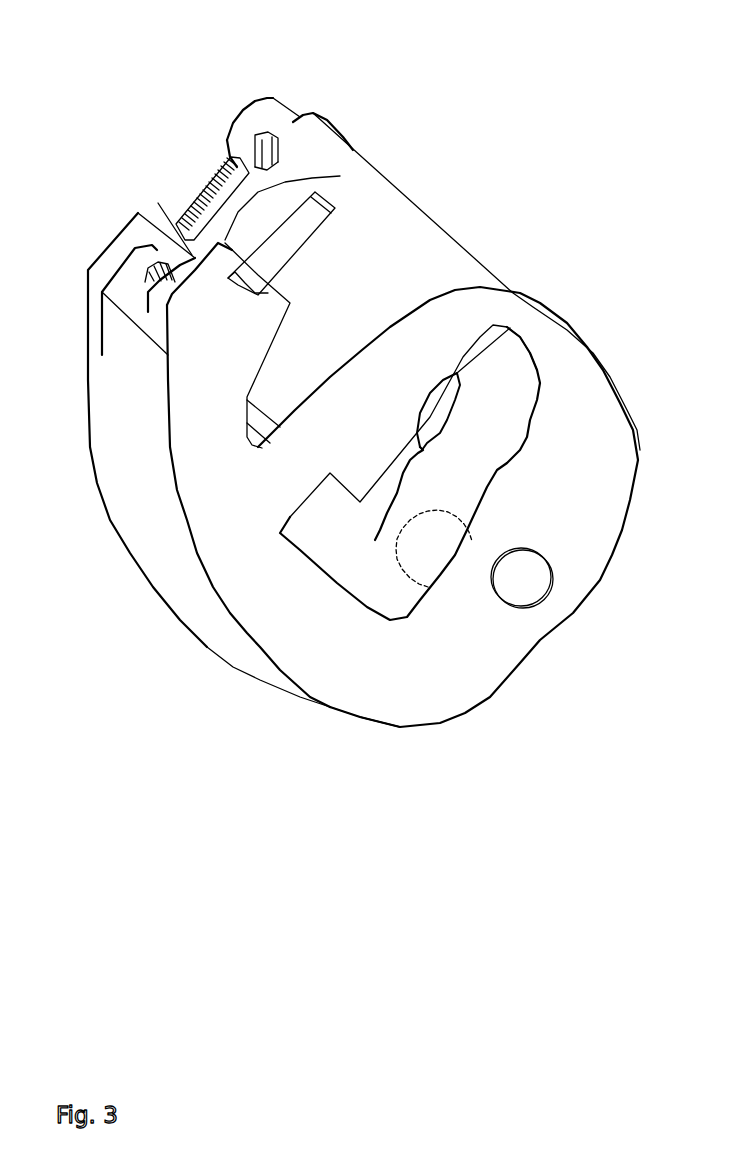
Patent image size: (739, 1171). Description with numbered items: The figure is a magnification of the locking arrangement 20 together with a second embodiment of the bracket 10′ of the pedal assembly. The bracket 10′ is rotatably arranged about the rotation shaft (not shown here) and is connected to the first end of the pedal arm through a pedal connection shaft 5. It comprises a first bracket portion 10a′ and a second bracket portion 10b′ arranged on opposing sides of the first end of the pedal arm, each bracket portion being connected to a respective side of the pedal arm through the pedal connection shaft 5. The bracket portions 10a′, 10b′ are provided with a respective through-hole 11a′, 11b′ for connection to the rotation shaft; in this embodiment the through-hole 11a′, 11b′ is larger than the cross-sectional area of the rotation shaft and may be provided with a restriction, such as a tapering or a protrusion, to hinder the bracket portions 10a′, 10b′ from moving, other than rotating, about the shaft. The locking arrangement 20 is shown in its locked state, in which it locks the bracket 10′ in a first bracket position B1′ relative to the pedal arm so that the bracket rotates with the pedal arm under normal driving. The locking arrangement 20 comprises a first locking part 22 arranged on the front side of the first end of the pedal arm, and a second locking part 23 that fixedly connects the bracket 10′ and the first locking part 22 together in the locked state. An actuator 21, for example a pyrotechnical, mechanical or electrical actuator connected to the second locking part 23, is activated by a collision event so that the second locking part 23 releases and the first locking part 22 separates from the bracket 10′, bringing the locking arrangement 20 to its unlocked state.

The bracket 10′ is at (244, 540).
The first bracket portion 10a′ is at (189, 499).
The second bracket portion 10b′ is at (449, 431).
The through-hole 11a′ is at (477, 421).
The through-hole 11b′ is at (486, 475).
The pedal connection shaft 5 is at (548, 627).
The first bracket position B1′ is at (308, 524).
The locking arrangement 20 is at (227, 179).
The actuator 21 is at (355, 153).
The first locking part 22 is at (390, 243).
The second locking part 23 is at (156, 198).